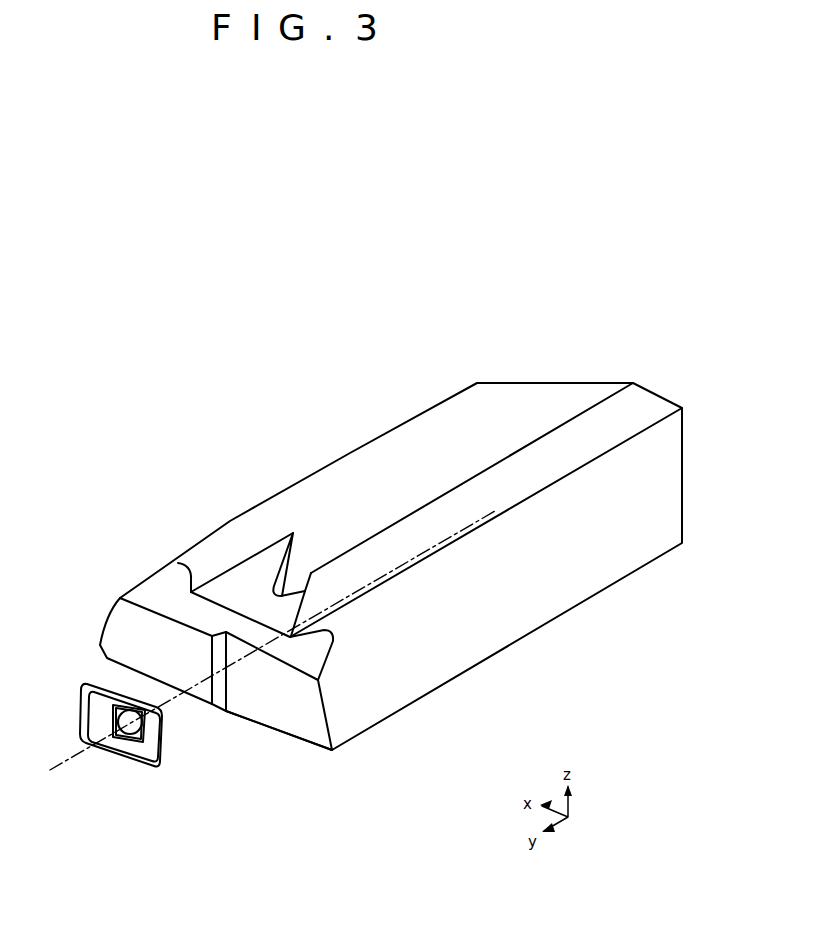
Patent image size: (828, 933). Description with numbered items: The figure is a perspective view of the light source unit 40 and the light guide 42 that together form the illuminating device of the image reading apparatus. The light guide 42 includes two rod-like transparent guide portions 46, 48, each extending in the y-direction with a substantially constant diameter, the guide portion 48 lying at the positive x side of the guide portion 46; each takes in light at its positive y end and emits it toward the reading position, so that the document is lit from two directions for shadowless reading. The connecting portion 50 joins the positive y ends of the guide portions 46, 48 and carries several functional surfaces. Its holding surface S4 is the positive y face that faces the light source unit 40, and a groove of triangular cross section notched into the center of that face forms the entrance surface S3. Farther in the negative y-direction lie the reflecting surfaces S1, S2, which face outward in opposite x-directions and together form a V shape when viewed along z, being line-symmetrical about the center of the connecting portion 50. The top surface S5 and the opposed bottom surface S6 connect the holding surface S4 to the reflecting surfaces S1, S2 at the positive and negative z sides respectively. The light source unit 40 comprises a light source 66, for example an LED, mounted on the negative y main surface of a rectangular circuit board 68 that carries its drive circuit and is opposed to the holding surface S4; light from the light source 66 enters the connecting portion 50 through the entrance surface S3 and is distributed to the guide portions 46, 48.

The light source unit 40 is at (119, 741).
The light guide 42 is at (340, 430).
The guide portion 46 is at (585, 584).
The guide portion 48 is at (435, 425).
The connecting portion 50 is at (233, 588).
The light source 66 is at (140, 705).
The circuit board 68 is at (132, 757).
The reflecting surface S1 is at (340, 582).
The reflecting surface S2 is at (283, 571).
The entrance surface S3 is at (212, 704).
The holding surface S4 is at (302, 707).
The top surface S5 is at (252, 560).
The bottom surface S6 is at (278, 737).